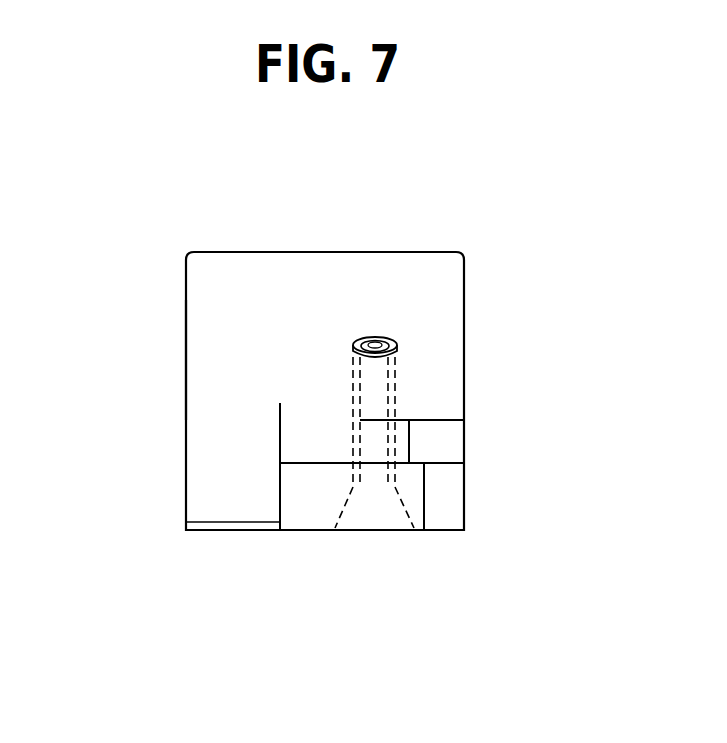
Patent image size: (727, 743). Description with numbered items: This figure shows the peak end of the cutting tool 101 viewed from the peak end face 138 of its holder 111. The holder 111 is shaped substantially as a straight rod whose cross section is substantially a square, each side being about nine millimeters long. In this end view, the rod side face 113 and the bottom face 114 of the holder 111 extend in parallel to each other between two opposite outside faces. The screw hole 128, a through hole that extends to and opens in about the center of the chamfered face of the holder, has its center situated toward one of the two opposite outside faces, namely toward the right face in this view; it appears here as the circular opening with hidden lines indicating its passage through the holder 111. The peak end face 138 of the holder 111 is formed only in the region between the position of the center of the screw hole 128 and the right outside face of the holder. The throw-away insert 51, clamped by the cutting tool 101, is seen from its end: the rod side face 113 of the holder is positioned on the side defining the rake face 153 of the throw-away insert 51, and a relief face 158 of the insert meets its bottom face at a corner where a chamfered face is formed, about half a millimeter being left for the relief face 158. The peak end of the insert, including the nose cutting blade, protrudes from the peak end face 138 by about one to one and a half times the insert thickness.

The cutting tool 101 is at (212, 234).
The holder 111 is at (186, 354).
The bottom face 114 is at (315, 252).
The screw hole 128 is at (372, 345).
The peak end face 138 is at (437, 438).
The relief face 158 is at (445, 502).
The rake face 153 is at (447, 533).
The rod side face 113 is at (240, 532).
The throw-away insert 51 is at (318, 538).